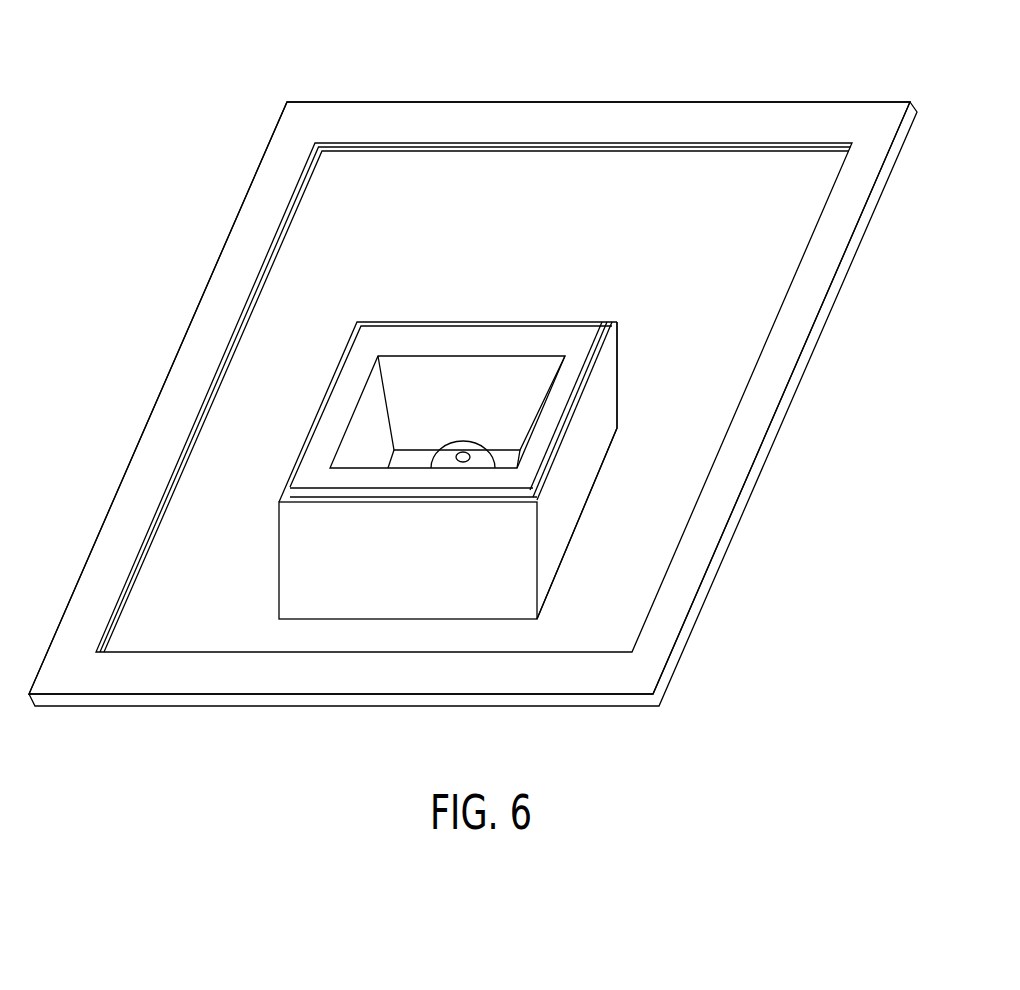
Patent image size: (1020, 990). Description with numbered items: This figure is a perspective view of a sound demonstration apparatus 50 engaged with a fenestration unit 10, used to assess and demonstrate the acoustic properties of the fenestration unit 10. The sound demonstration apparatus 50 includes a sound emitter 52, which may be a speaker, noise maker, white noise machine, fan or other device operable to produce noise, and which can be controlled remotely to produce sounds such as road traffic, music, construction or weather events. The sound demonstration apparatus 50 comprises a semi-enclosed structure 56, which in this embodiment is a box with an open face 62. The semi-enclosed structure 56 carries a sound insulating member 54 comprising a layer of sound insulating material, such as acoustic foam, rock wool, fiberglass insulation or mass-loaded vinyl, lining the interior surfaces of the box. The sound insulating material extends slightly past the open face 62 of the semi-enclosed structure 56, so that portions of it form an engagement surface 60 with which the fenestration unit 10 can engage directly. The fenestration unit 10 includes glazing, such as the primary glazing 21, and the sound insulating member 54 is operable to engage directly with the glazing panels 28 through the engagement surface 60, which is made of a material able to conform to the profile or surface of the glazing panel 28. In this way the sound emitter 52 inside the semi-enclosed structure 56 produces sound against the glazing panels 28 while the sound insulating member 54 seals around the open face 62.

The fenestration unit 10 is at (155, 730).
The primary glazing 21 is at (468, 173).
The glazing panels 28 is at (622, 192).
The sound demonstration apparatus 50 is at (258, 553).
The sound emitter 52 is at (474, 448).
The sound insulating member 54 is at (581, 348).
The semi-enclosed structure 56 is at (600, 390).
The engagement surface 60 is at (421, 342).
The open face 62 is at (462, 382).